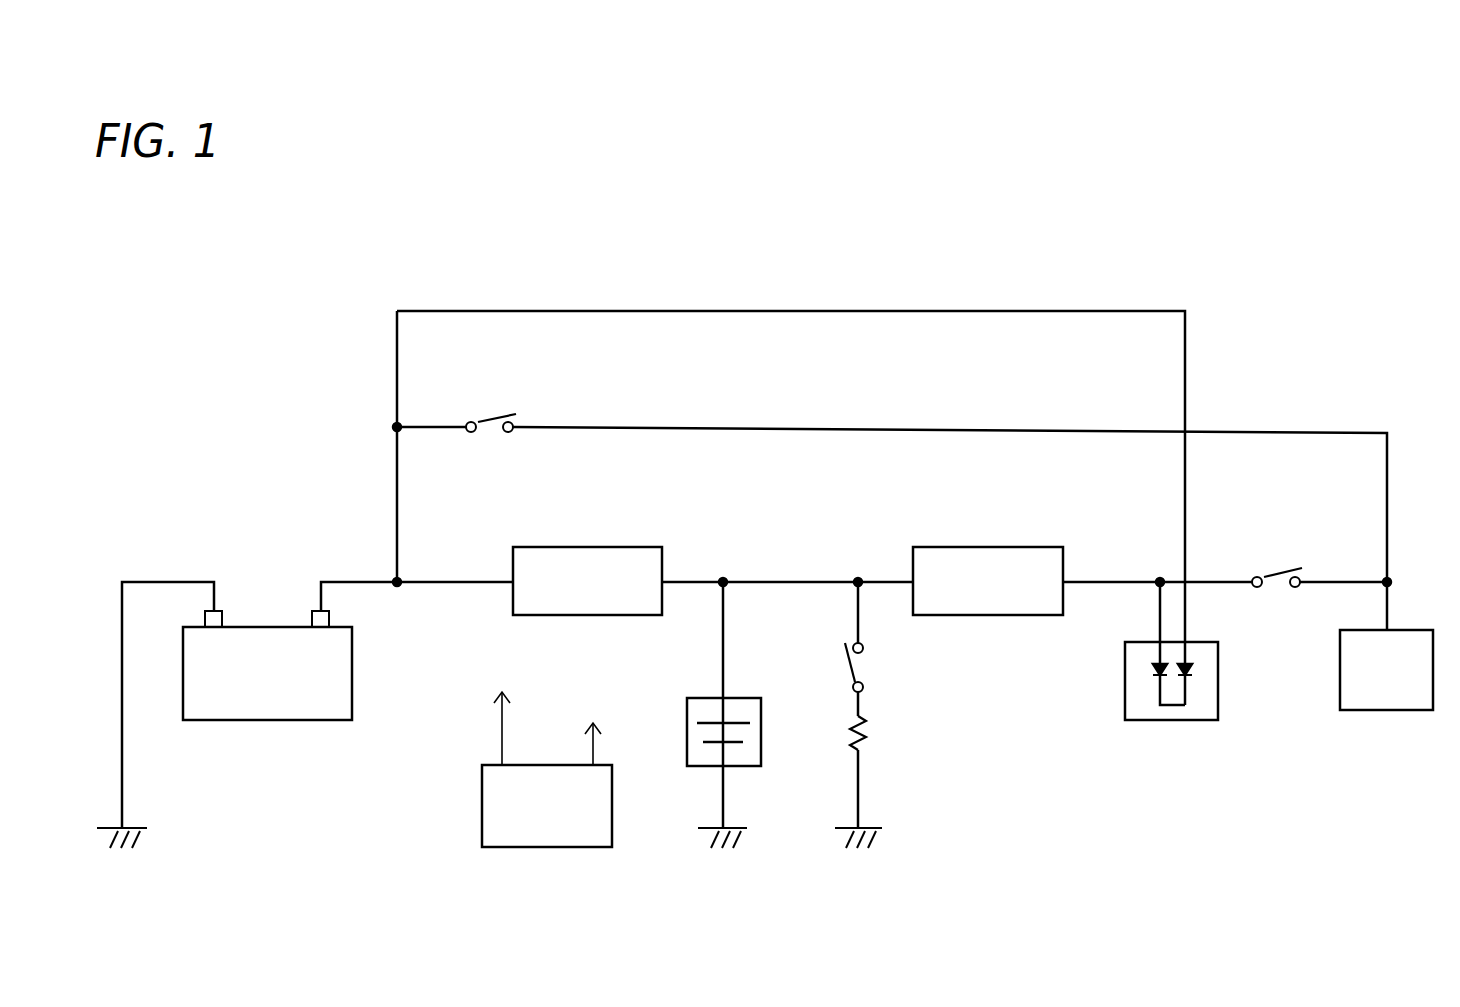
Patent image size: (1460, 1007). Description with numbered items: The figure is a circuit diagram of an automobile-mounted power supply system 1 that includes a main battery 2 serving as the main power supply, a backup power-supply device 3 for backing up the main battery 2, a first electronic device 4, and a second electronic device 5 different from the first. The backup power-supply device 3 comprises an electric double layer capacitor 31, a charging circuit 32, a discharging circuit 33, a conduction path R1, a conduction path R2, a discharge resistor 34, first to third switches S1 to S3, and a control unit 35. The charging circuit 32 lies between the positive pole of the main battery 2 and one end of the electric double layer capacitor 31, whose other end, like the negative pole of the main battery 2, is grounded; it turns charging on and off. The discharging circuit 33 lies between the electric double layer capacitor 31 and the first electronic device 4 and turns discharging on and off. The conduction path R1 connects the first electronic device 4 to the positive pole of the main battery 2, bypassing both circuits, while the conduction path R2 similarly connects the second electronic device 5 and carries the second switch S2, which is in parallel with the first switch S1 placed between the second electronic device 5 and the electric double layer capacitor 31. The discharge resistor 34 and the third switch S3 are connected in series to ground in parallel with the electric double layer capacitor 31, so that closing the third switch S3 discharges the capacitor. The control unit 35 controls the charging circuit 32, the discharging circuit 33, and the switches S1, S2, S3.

The power supply system 1 is at (1293, 272).
The main battery 2 is at (305, 720).
The backup power-supply device 3 is at (1130, 288).
The first electronic device 4 is at (1170, 720).
The second electronic device 5 is at (1380, 710).
The electric double layer capacitor 31 is at (733, 698).
The charging circuit 32 is at (613, 547).
The discharging circuit 33 is at (955, 547).
The discharge resistor 34 is at (870, 725).
The control unit 35 is at (548, 847).
The conduction path R1 is at (1010, 310).
The conduction path R2 is at (913, 430).
The first switch S1 is at (1275, 570).
The second switch S2 is at (494, 413).
The third switch S3 is at (858, 662).